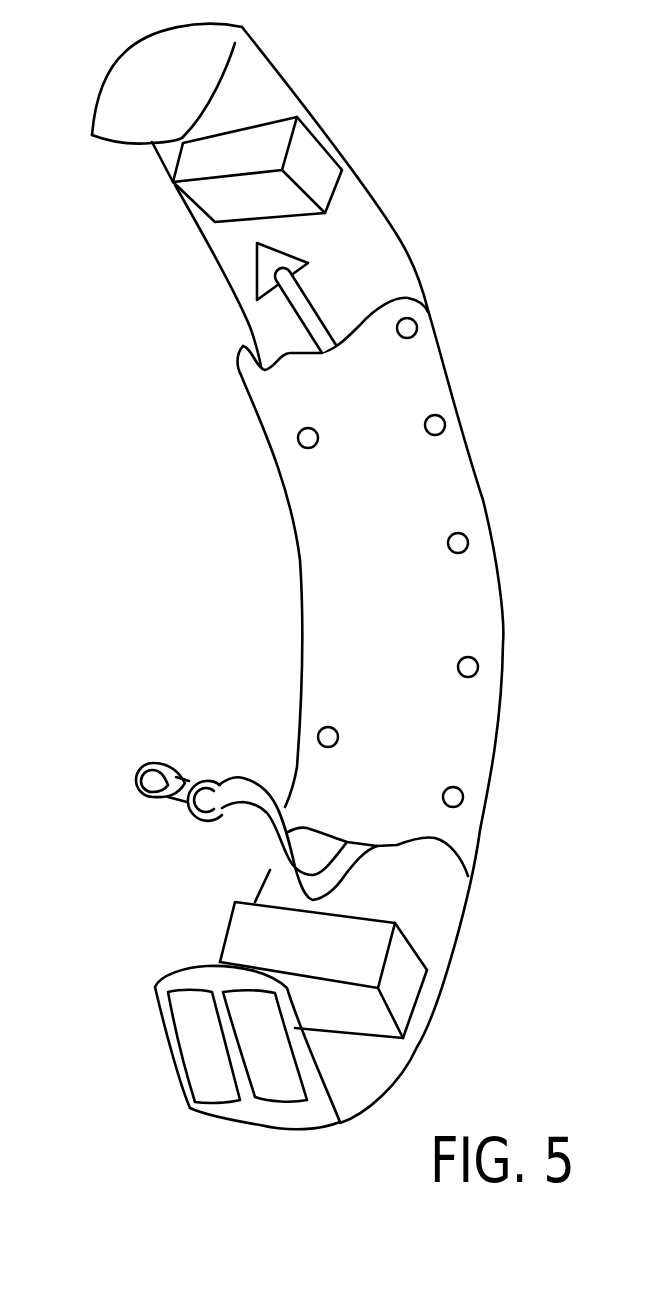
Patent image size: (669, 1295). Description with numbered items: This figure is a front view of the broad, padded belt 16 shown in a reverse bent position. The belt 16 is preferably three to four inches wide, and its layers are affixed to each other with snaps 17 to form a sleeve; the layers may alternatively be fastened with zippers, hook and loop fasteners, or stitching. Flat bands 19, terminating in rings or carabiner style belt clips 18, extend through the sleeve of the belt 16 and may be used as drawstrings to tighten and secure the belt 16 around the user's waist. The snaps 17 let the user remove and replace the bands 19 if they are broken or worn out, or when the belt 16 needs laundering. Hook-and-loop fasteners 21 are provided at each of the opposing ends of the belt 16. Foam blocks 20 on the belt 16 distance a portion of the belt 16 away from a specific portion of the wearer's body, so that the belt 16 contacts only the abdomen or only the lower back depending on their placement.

The belt 16 is at (313, 107).
The snaps 17 is at (469, 657).
The belt clips 18 is at (133, 773).
The flat bands 19 is at (263, 818).
The foam blocks 20 is at (337, 160).
The hook-and-loop fasteners 21 is at (157, 1000).